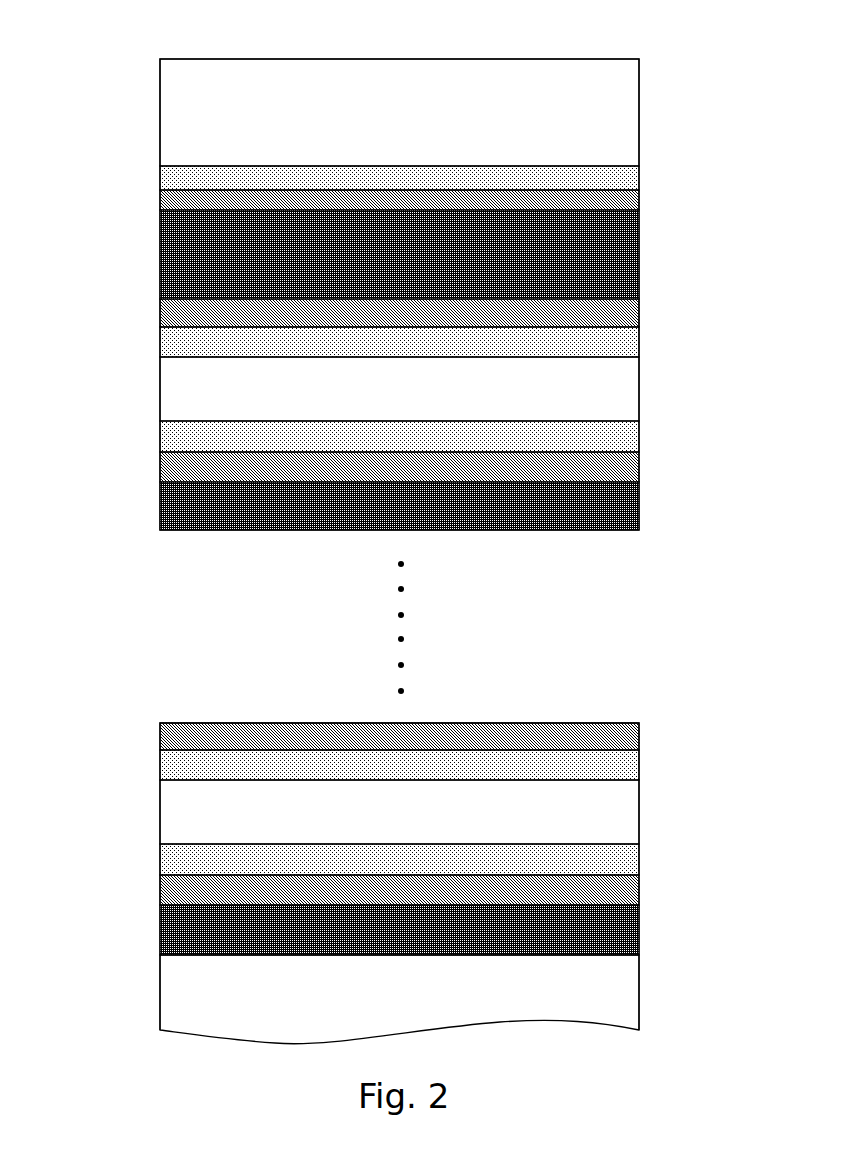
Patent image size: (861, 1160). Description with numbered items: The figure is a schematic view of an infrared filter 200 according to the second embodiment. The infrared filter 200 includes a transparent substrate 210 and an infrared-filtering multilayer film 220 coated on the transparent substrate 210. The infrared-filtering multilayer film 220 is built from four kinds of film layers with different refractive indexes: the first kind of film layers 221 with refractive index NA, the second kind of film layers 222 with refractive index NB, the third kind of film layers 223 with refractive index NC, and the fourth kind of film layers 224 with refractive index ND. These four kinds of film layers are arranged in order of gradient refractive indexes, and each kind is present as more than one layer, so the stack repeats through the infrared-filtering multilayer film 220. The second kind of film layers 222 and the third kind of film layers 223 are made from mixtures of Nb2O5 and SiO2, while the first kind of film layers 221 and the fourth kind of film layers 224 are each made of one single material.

The infrared filter 200 is at (90, 43).
The transparent substrate 210 is at (628, 995).
The infrared-filtering multilayer film 220 is at (133, 59).
The first kind of film layers 221 is at (639, 253).
The second kind of film layers 222 is at (628, 203).
The third kind of film layers 223 is at (628, 175).
The fourth kind of film layers 224 is at (628, 102).